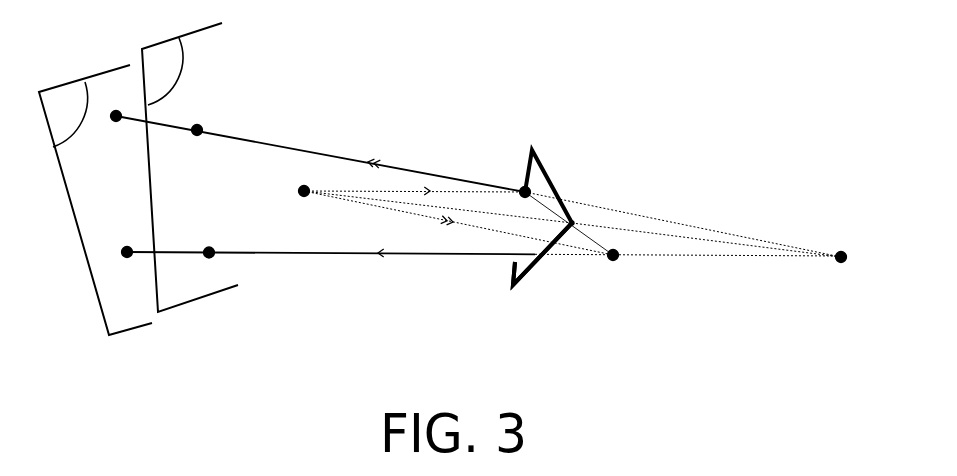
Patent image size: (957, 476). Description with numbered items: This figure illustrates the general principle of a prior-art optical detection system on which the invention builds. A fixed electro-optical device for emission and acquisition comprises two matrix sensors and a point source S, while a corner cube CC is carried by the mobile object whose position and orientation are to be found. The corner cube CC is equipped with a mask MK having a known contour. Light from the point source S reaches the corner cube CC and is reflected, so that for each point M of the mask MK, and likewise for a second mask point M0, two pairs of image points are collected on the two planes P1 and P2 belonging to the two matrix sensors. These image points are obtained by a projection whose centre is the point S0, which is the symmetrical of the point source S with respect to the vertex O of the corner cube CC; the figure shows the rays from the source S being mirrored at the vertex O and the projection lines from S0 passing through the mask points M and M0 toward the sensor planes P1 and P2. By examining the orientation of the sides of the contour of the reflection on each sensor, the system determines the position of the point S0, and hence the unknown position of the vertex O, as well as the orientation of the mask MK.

The plane of the first matrix sensor P1 is at (190, 167).
The plane of the second matrix sensor P2 is at (95, 200).
The point source S is at (304, 179).
The centre of projection S0 is at (840, 269).
The point of the mask M is at (513, 178).
The point of the mask M0 is at (617, 269).
The vertex of the corner cube O is at (580, 212).
The mask MK is at (528, 157).
The corner cube CC is at (530, 273).